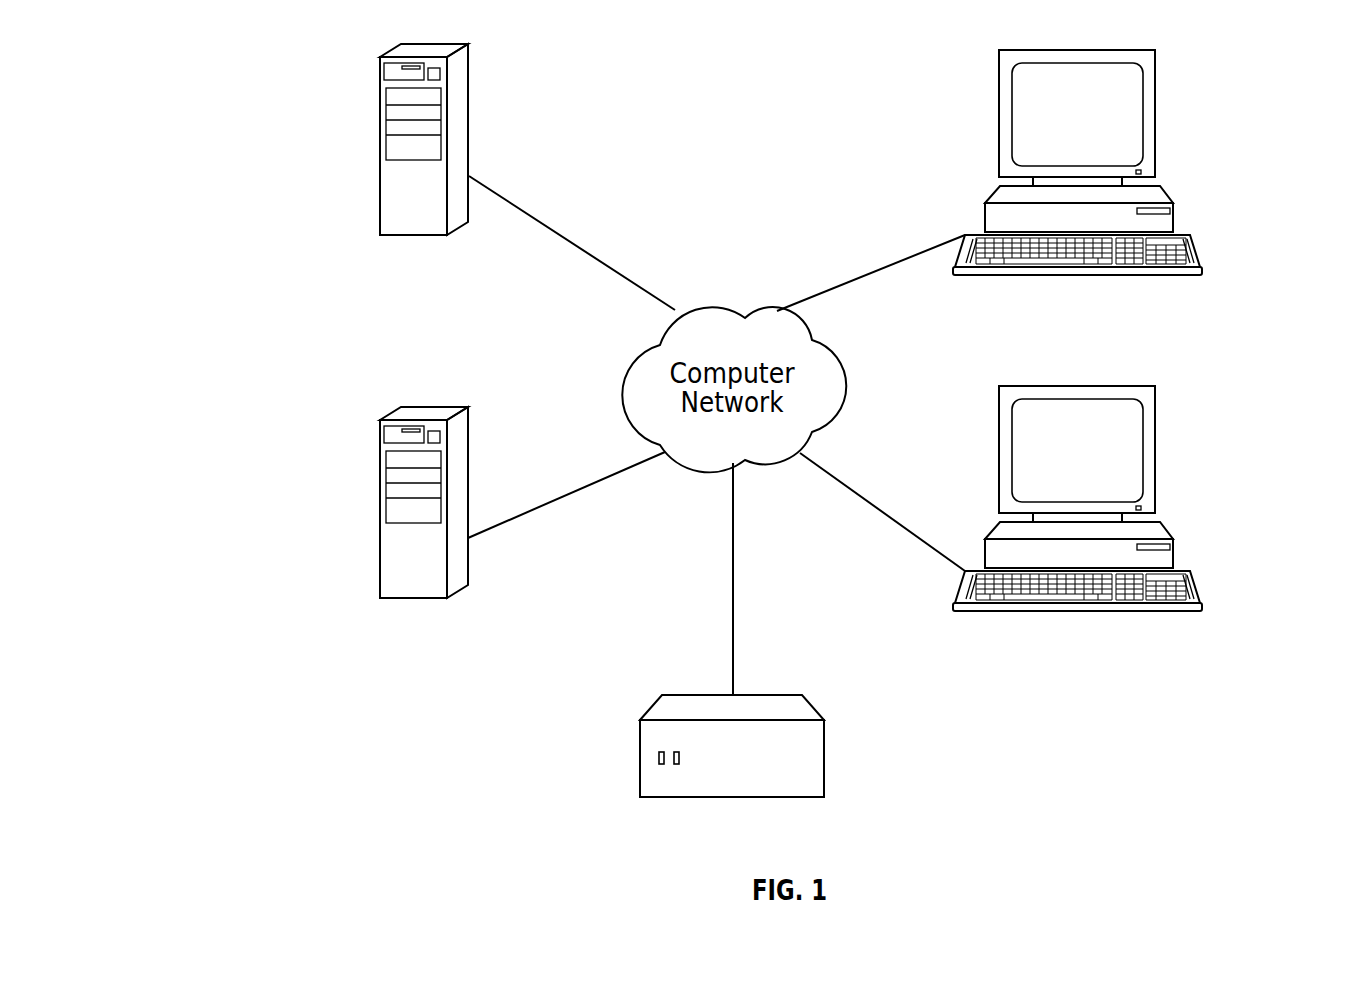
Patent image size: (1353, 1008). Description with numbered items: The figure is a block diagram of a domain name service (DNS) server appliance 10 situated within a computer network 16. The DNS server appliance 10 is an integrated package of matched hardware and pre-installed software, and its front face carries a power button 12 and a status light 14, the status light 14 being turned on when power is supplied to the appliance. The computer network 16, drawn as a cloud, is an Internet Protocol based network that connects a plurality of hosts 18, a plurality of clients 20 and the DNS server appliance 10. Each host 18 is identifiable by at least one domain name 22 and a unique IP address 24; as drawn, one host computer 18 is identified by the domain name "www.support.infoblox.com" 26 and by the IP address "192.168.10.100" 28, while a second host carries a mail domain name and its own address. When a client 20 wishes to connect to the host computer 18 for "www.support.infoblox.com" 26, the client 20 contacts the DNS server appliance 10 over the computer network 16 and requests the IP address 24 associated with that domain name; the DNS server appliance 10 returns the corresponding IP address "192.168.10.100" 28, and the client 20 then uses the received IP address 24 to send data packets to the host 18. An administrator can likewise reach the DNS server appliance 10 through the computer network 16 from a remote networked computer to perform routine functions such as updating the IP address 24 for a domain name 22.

The DNS server appliance 10 is at (738, 767).
The power button 12 is at (676, 765).
The status light 14 is at (658, 758).
The computer network 16 is at (1233, 161).
The host 18 is at (380, 490).
The client 20 is at (1156, 430).
The domain name 22 is at (253, 636).
The IP address 24 is at (322, 663).
The domain name "www.support.infoblox.com" 26 is at (252, 268).
The IP address "192.168.10.100" 28 is at (320, 296).